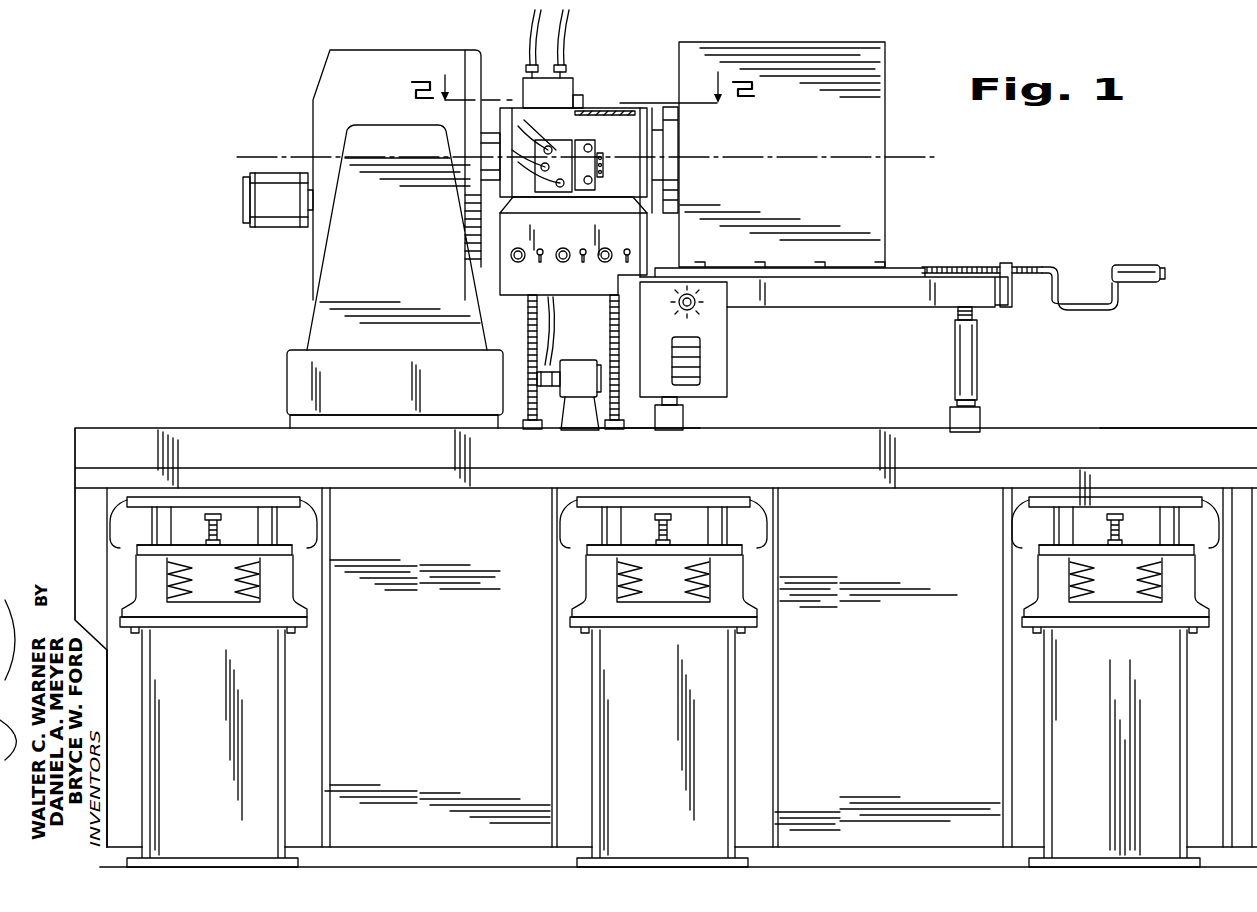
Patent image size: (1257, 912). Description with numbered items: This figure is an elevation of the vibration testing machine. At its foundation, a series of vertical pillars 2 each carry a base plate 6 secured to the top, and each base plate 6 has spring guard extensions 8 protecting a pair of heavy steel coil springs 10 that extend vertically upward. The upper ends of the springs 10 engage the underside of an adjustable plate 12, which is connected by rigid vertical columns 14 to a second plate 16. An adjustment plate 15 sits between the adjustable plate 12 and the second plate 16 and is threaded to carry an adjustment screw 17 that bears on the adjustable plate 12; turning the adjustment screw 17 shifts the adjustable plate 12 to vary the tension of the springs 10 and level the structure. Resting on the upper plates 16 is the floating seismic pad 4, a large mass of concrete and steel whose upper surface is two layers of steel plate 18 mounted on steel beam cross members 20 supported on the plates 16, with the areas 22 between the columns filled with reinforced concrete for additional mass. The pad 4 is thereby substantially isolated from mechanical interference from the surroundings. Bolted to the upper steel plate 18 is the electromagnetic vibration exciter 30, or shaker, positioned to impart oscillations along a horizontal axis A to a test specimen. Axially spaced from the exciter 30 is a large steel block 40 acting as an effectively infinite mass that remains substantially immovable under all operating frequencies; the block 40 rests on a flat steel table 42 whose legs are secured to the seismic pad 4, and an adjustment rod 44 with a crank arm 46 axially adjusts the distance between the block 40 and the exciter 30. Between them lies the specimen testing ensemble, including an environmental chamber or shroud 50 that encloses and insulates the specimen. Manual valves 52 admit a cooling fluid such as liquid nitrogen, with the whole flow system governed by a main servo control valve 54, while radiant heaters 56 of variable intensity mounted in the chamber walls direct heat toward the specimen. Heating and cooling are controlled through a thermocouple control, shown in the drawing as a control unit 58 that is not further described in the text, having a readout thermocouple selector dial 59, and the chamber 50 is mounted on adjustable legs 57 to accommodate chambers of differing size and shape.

The vertical pillar 2 is at (270, 750).
The seismic pad 4 is at (58, 456).
The base plate 6 is at (303, 621).
The spring guard extension 8 is at (283, 594).
The coil spring 10 is at (262, 582).
The adjustable plate 12 is at (250, 556).
The rigid vertical column 14 is at (152, 525).
The adjustment plate 15 is at (735, 548).
The second plate 16 is at (585, 500).
The adjustment screw 17 is at (205, 518).
The steel plate 18 is at (1163, 437).
The steel beam cross member 20 is at (318, 500).
The area between columns 22 is at (678, 677).
The electromagnetic vibration exciter 30 is at (338, 255).
The steel block 40 is at (892, 77).
The steel table 42 is at (892, 282).
The adjustment rod 44 is at (978, 266).
The crank arm 46 is at (1108, 302).
The environmental chamber 50 is at (616, 96).
The manual valve 52 is at (605, 262).
The main servo control valve 54 is at (568, 362).
The radiant heater 56 is at (572, 147).
The adjustable leg 57 is at (618, 398).
The control box 58 is at (722, 358).
The thermocouple selector dial 59 is at (696, 305).
The horizontal axis A is at (905, 157).